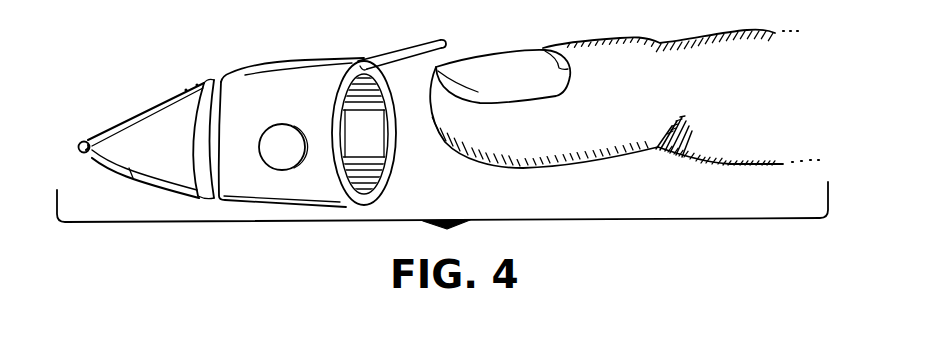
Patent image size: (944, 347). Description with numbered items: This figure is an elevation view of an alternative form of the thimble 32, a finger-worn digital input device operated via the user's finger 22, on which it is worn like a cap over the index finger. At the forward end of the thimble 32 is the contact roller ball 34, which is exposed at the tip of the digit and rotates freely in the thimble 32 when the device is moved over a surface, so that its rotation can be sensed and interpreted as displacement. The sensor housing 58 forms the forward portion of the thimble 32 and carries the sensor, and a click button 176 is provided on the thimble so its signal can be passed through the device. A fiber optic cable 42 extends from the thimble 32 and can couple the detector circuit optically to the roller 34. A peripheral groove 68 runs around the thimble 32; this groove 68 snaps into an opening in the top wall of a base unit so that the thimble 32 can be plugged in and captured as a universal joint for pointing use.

The user's finger 22 is at (595, 150).
The thimble 32 is at (257, 54).
The contact roller ball 34 is at (79, 146).
The fiber optic cable 42 is at (393, 62).
The sensor housing 58 is at (127, 178).
The peripheral groove 68 is at (210, 200).
The click button 176 is at (283, 127).